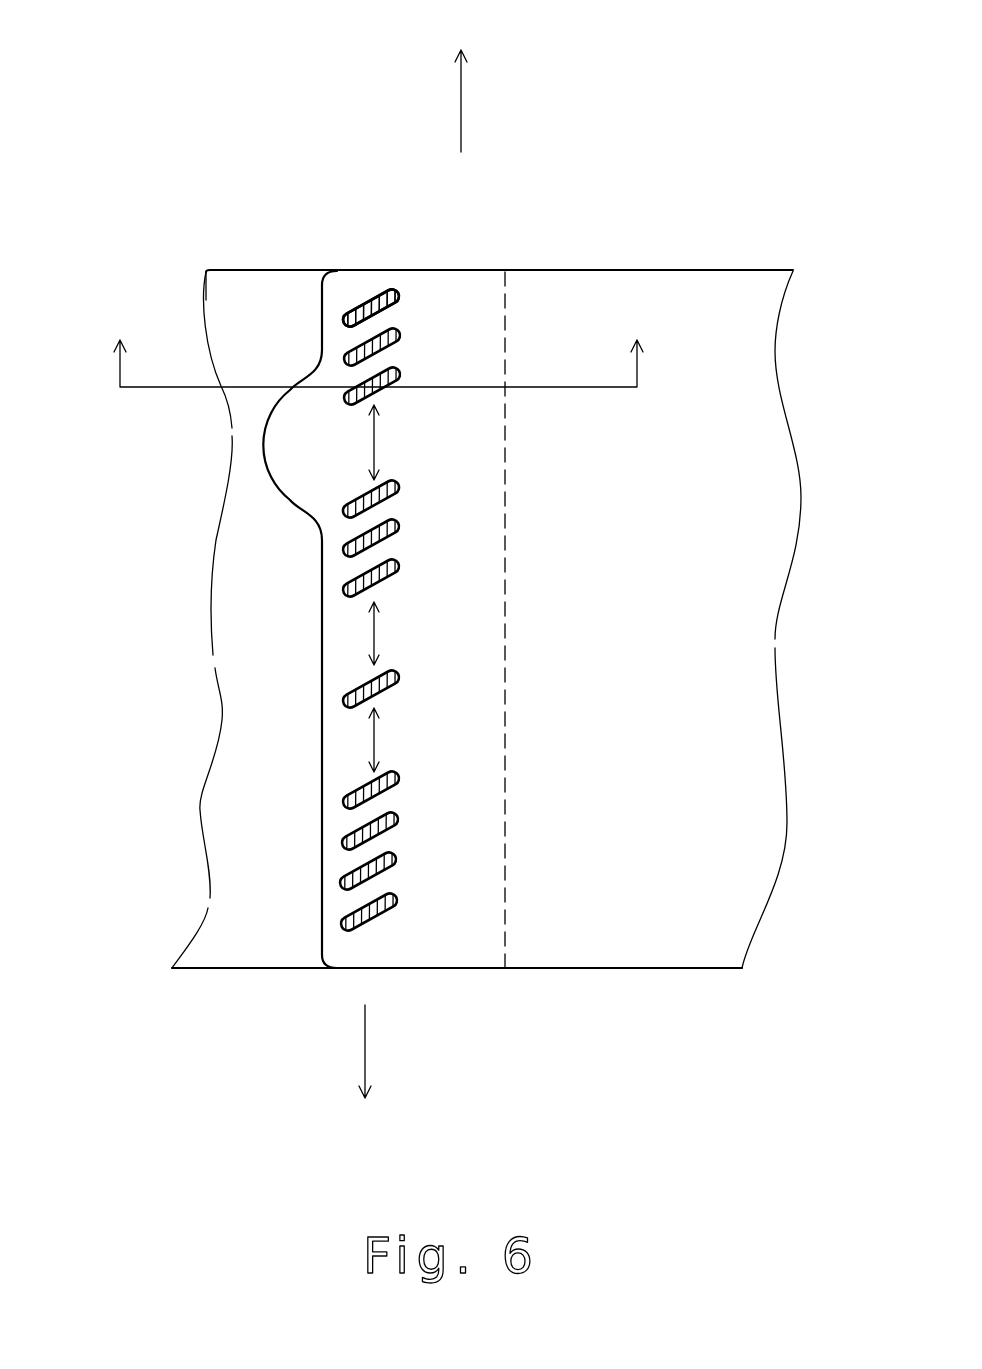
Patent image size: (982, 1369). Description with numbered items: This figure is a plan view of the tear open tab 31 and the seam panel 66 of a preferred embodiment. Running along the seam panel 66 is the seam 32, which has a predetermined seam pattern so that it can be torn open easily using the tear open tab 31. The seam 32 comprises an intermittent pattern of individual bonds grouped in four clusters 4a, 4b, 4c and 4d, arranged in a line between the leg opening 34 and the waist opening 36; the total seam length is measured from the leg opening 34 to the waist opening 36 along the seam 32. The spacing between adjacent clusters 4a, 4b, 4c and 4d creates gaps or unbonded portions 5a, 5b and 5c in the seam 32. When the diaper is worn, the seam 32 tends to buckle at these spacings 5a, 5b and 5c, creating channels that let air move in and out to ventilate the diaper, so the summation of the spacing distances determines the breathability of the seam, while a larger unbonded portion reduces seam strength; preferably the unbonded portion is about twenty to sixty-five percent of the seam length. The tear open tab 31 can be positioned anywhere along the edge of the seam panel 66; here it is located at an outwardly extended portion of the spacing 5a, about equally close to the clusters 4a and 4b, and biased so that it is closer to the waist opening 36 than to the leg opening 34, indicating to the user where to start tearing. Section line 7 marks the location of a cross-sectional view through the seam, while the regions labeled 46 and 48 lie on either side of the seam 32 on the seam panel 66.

The cluster 4a is at (408, 287).
The cluster 4b is at (408, 472).
The cluster 4c is at (398, 675).
The cluster 4d is at (408, 763).
The spacing 5a is at (374, 440).
The unbonded portion 5b is at (374, 630).
The unbonded portion 5c is at (374, 738).
The section line 7- 7 is at (379, 339).
The tear open tab 31 is at (293, 447).
The seam 32 is at (377, 288).
The leg opening 34 is at (363, 1076).
The waist opening 36 is at (458, 78).
The left region 46 is at (263, 300).
The right region 48 is at (582, 310).
The seam panel 66 is at (463, 940).